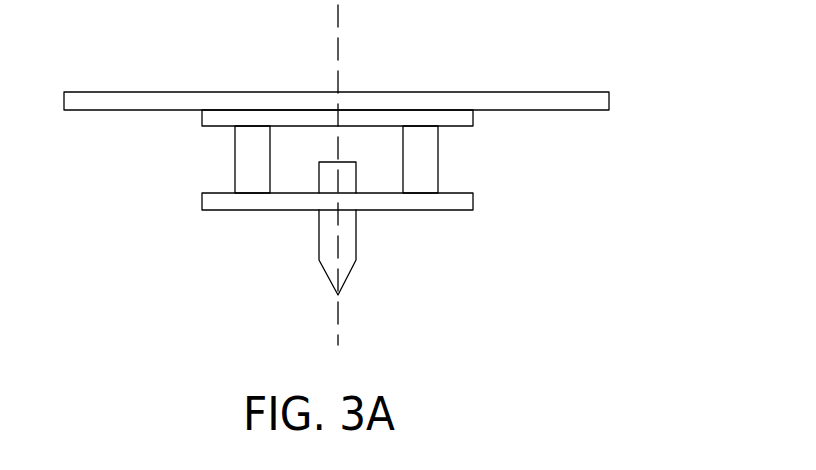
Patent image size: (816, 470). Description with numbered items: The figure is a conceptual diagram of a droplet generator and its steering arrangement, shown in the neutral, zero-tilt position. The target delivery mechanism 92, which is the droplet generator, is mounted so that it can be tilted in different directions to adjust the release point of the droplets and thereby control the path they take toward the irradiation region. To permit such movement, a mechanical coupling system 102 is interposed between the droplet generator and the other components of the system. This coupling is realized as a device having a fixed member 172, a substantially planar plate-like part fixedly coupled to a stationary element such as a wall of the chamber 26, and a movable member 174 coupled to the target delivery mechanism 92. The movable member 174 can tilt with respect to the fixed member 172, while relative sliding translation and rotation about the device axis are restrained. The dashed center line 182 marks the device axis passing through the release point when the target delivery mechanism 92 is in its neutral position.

The chamber 26 is at (198, 92).
The fixed member 172 is at (192, 125).
The movable member 174 is at (475, 210).
The mechanical coupling system 102 is at (233, 160).
The target delivery mechanism 92 is at (318, 227).
The center axis 182 is at (339, 329).